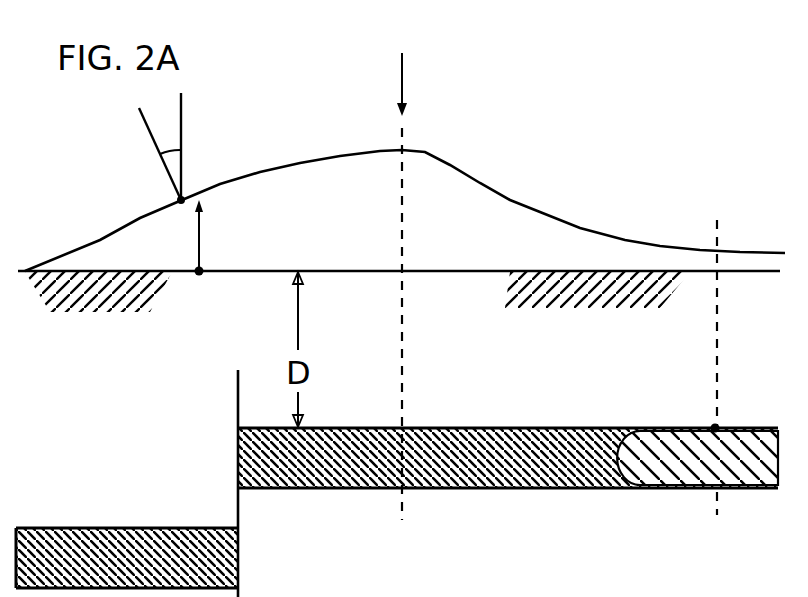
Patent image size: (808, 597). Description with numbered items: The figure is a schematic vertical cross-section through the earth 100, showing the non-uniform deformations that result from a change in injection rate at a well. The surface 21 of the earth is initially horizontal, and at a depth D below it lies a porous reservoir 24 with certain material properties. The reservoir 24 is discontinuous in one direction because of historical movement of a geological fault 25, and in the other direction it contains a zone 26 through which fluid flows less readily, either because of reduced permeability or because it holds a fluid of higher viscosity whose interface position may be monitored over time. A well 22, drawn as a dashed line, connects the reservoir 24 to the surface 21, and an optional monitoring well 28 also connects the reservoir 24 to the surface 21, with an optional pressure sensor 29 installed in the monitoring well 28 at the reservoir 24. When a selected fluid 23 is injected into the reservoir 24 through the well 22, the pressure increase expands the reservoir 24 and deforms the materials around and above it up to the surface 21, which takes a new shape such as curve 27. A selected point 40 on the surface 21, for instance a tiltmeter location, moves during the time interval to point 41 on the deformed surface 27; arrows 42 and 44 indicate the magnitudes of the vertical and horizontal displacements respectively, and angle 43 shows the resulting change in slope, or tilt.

The surface of the earth 21 is at (512, 270).
The well 22 is at (401, 332).
The injection of fluid 23 is at (402, 78).
The reservoir 24 is at (553, 428).
The geological fault 25 is at (238, 403).
The zone of reservoir 26 is at (680, 488).
The deformation of surface 27 is at (626, 240).
The monitoring well 28 is at (717, 373).
The pressure sensor 29 is at (712, 428).
The point on the surface of the earth 40 is at (201, 262).
The position of point after deformation 41 is at (184, 196).
The vertical displacement 42 is at (201, 224).
The change in tilt 43 is at (161, 136).
The horizontal displacement 44 is at (178, 205).
The earth 100 is at (130, 356).